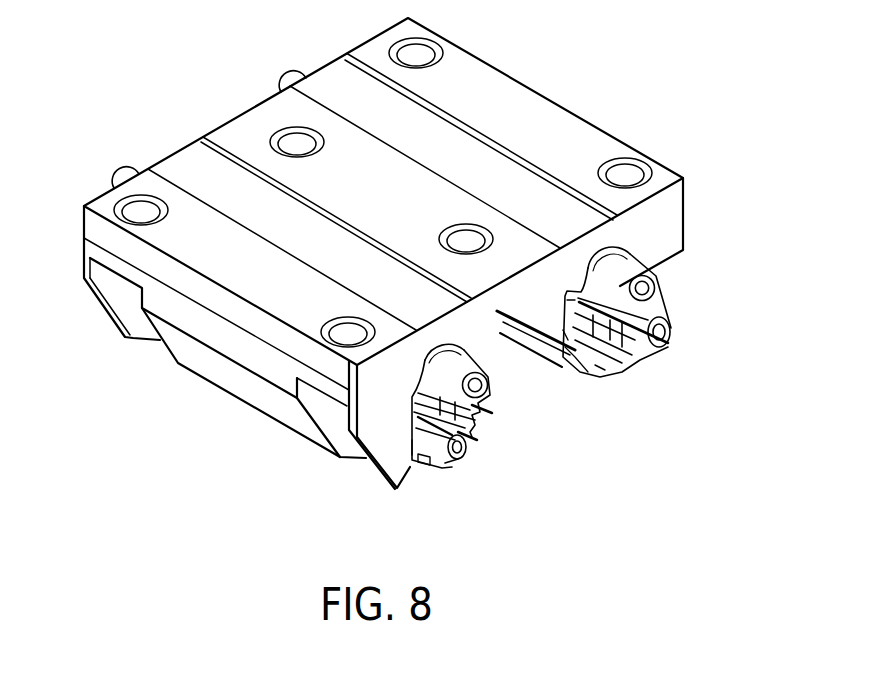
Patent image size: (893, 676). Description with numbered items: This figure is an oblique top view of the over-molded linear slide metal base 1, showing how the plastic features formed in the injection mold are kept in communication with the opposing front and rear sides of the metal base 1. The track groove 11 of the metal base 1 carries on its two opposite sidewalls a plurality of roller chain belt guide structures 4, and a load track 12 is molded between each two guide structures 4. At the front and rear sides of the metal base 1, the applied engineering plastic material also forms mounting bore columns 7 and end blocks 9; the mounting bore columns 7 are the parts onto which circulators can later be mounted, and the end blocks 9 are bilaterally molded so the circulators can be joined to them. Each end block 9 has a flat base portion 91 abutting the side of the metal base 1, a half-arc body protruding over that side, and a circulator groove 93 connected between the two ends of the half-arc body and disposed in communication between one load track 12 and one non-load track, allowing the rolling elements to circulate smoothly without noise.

The linear slide metal base 1 is at (493, 90).
The roller chain belt guide structure 4 is at (540, 335).
The mounting bore column 7 is at (290, 80).
The end block 9 is at (663, 357).
The track groove 11 is at (497, 352).
The load track 12 is at (553, 318).
The flat base portion 91 is at (418, 465).
The circulator groove 93 is at (477, 427).